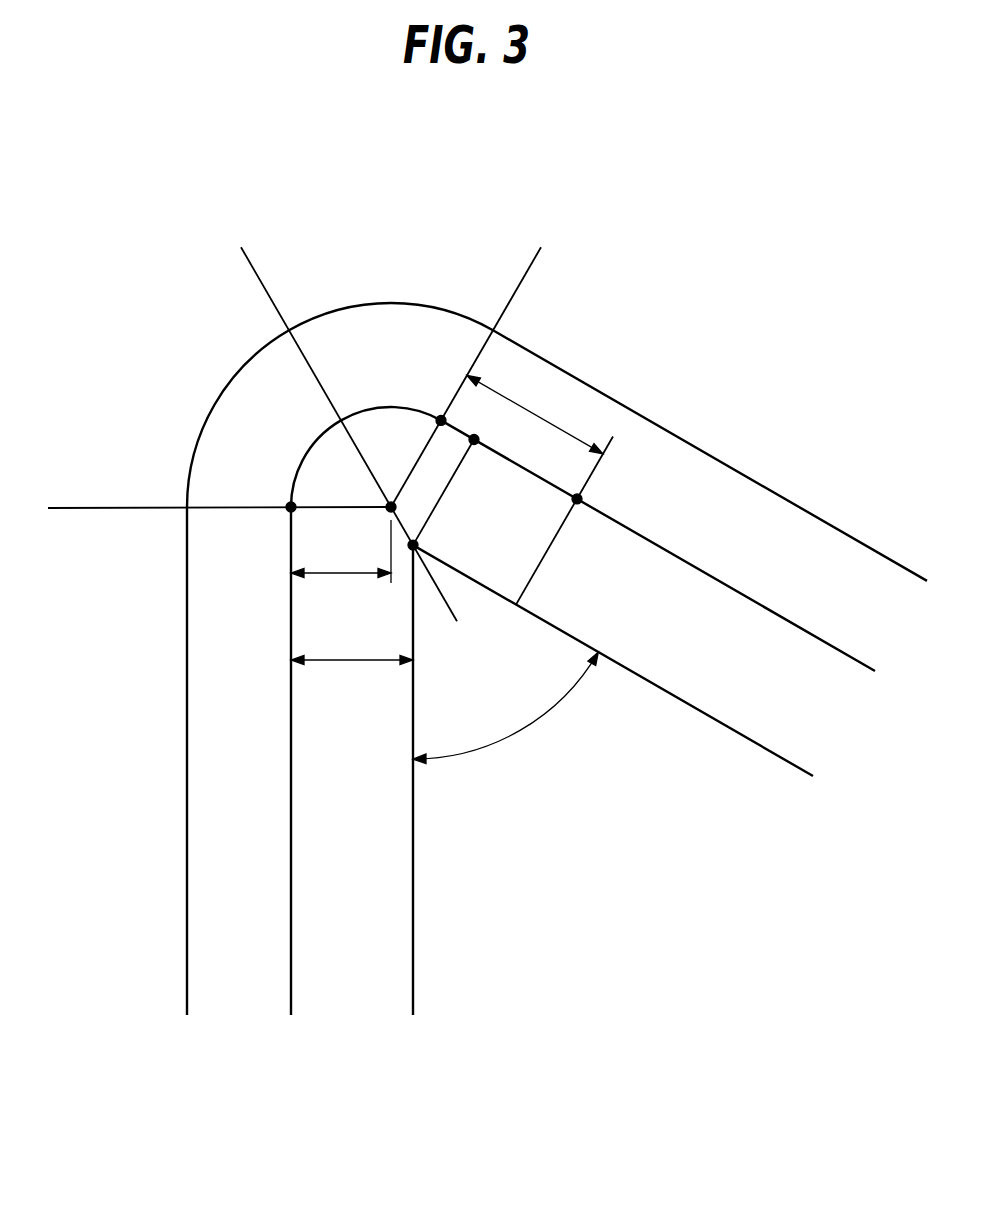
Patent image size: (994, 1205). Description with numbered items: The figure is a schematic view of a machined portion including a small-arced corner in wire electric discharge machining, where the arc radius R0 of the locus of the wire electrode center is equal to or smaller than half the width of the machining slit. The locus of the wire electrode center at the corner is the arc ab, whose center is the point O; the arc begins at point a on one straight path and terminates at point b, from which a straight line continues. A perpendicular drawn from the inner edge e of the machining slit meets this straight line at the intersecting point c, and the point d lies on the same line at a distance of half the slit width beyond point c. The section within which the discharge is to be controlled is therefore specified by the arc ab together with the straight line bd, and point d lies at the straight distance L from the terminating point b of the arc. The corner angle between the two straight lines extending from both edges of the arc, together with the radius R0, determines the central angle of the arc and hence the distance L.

The starting point of arc a is at (282, 491).
The terminating point of arc b is at (436, 401).
The intersecting point c is at (480, 423).
The end point of specified section d is at (597, 491).
The inner edge of machining slit e is at (429, 535).
The center of arc O is at (404, 509).
The arc radius R0 is at (341, 551).
The straight distance L is at (535, 414).